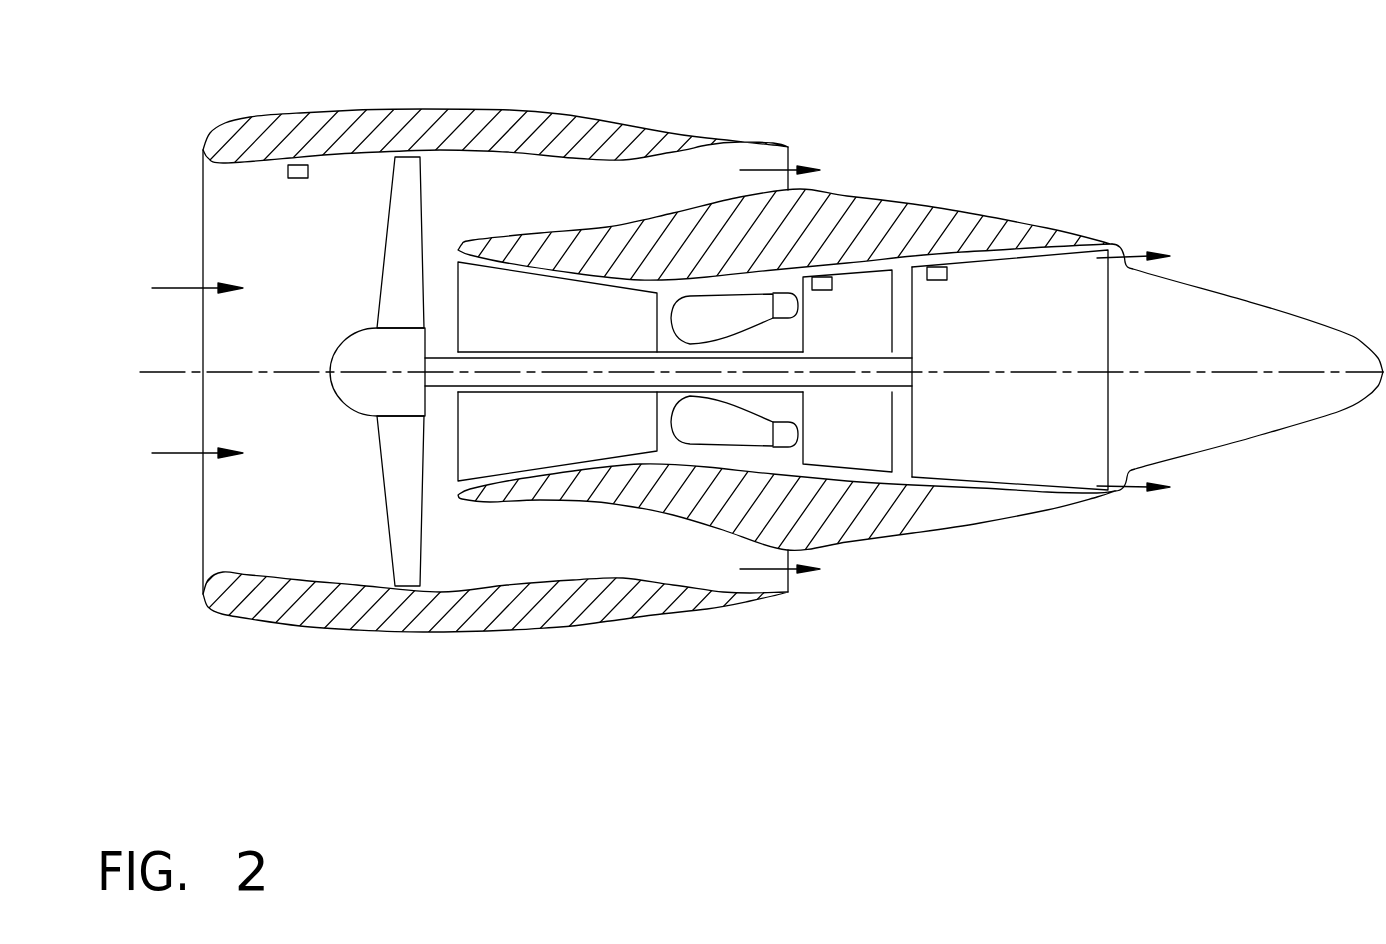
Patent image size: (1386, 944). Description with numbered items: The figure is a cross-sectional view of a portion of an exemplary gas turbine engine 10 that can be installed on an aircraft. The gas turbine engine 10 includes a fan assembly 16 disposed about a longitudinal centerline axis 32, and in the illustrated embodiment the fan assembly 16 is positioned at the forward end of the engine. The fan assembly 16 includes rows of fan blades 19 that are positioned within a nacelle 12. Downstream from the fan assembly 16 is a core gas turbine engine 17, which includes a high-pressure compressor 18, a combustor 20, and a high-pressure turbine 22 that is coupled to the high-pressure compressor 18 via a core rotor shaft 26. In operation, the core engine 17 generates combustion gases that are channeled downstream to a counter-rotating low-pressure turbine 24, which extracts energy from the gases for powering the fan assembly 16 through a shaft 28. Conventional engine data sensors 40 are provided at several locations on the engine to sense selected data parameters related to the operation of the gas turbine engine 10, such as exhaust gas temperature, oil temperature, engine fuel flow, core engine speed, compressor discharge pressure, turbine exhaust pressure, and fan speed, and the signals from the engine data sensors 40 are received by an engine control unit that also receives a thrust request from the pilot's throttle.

The gas turbine engine 10 is at (822, 58).
The nacelle 12 is at (203, 178).
The fan assembly 16 is at (432, 218).
The core gas turbine engine 17 is at (917, 137).
The high-pressure compressor 18 is at (528, 320).
The fan blades 19 is at (390, 272).
The combustor 20 is at (687, 423).
The high-pressure turbine 22 is at (834, 327).
The counter-rotating low-pressure turbine 24 is at (986, 318).
The core rotor shaft 26 is at (670, 350).
The shaft 28 is at (900, 392).
The longitudinal centerline axis 32 is at (237, 370).
The engine data sensors 40 is at (297, 179).